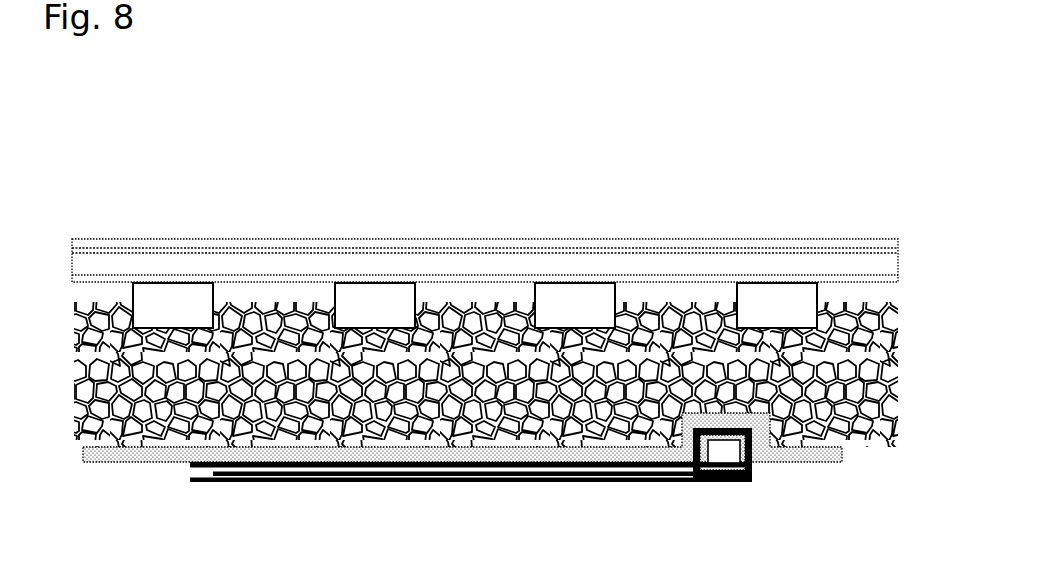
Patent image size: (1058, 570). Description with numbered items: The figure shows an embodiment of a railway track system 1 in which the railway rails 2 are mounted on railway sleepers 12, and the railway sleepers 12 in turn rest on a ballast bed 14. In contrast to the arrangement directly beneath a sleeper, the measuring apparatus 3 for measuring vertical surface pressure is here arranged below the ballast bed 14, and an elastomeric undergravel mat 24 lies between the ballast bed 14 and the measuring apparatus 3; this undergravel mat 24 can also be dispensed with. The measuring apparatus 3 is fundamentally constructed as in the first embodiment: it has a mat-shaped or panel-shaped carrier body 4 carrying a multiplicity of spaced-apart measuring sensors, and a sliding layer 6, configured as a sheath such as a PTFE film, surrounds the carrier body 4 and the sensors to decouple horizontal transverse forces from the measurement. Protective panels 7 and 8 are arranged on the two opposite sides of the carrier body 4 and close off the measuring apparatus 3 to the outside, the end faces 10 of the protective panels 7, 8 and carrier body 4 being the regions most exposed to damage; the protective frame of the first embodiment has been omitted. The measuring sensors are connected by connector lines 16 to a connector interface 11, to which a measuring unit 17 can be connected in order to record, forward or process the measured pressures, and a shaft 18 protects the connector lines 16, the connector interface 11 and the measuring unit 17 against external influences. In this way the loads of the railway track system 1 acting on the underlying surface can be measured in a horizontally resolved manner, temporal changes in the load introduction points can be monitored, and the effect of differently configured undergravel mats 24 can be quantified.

The railway track system 1 is at (695, 198).
The railway rails 2 is at (868, 263).
The measuring apparatus 3 is at (402, 488).
The carrier body 4 is at (718, 477).
The sliding layer 6 is at (732, 463).
The protective panel 7 is at (295, 468).
The protective panel 8 is at (683, 483).
The end faces 10 is at (436, 511).
The connector interface 11 is at (738, 463).
The railway sleepers 12 is at (163, 302).
The ballast bed 14 is at (870, 343).
The connector lines 16 is at (733, 467).
The measuring unit 17 is at (740, 442).
The shaft 18 is at (750, 447).
The undergravel mat 24 is at (113, 458).